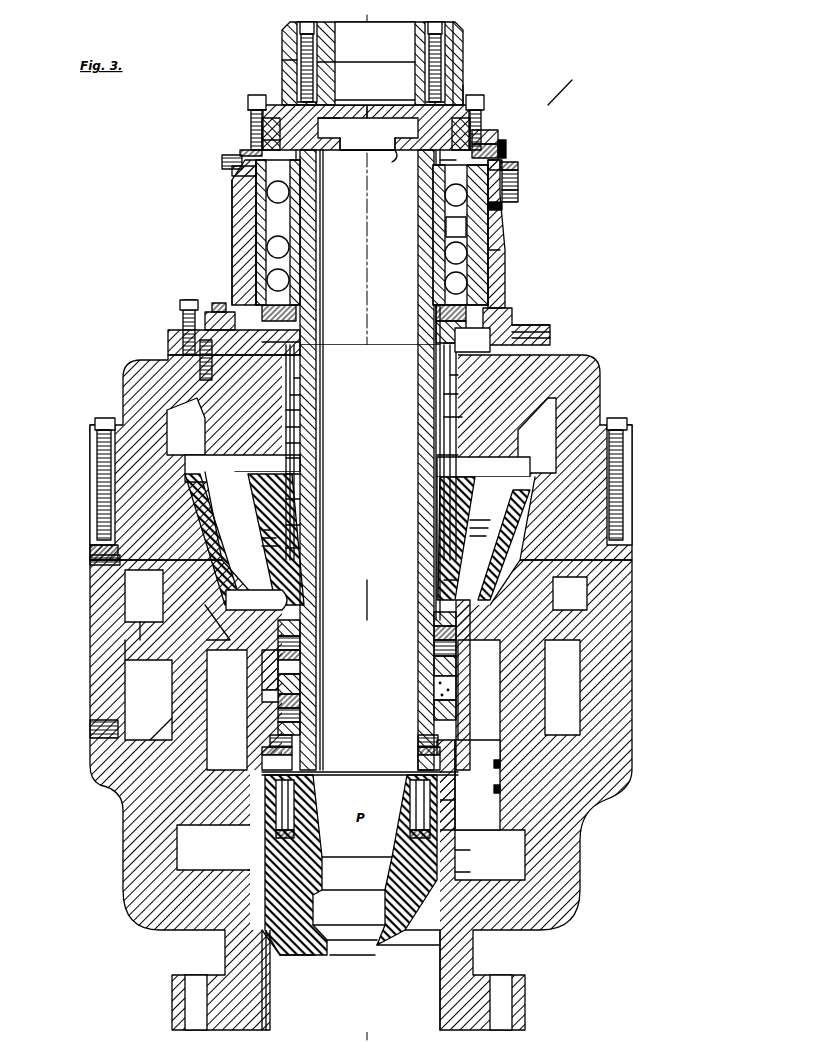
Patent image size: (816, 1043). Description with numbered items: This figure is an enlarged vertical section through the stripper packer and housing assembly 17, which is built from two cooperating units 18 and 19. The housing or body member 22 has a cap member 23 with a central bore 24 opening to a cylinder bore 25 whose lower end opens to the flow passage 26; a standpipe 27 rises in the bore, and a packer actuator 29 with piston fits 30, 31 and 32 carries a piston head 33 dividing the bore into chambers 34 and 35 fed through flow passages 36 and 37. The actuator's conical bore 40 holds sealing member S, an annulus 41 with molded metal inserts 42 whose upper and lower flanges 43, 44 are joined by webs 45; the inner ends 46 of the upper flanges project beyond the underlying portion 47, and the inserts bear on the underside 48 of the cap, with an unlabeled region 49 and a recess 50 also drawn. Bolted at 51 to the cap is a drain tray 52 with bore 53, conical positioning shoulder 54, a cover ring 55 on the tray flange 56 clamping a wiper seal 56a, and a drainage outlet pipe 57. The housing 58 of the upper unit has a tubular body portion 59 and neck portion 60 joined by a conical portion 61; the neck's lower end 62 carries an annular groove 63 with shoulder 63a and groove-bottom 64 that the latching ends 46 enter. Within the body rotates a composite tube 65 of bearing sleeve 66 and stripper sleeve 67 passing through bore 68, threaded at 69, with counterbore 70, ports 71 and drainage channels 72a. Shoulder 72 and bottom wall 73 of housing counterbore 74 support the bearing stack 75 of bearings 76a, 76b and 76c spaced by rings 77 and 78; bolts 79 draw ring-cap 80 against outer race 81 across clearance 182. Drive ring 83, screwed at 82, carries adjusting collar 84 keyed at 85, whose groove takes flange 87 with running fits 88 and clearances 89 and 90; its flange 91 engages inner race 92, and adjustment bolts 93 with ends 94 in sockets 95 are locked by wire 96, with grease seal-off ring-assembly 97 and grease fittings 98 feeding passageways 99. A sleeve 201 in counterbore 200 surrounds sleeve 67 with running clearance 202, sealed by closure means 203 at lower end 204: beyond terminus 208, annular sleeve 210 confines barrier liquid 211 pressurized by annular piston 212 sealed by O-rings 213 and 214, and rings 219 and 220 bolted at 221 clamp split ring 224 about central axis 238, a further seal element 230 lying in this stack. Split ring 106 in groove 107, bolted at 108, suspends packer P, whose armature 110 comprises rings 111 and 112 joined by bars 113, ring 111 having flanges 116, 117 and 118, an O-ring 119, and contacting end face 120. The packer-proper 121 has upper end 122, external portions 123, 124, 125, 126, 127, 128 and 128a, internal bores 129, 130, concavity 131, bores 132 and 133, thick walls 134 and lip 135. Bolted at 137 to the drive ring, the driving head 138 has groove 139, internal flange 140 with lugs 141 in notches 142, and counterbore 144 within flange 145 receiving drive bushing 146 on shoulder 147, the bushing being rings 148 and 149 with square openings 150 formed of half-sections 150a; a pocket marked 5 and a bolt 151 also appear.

The pocket 5 is at (535, 462).
The assembly 17 is at (530, 312).
The unit 18 is at (548, 105).
The unit 19 is at (72, 538).
The housing or body member 22 is at (606, 748).
The cap member 23 is at (130, 380).
The central bore 24 is at (444, 375).
The cylinder bore 25 is at (500, 768).
The flow passage 26 is at (438, 976).
The standpipe 27 is at (452, 713).
The packer actuator 29 is at (548, 603).
The piston fit 30 is at (170, 716).
The piston fit 31 is at (120, 653).
The piston fit 32 is at (120, 545).
The piston head 33 is at (139, 620).
The chamber 34 is at (148, 700).
The chamber 35 is at (144, 596).
The flow passage 36 is at (90, 732).
The flow passage 37 is at (90, 554).
The conical bore 40 is at (215, 614).
The annulus 41 is at (436, 530).
The metal inserts 42 is at (212, 578).
The upper plate or flange 43 is at (242, 468).
The lower plate or flange 44 is at (256, 600).
The vertical web 45 is at (238, 529).
The inner end 46 is at (436, 480).
The underlying portion 47 is at (440, 498).
The underside 48 is at (483, 467).
The valve member 49 is at (455, 565).
The recess 50 is at (214, 847).
The bolts 51 is at (190, 352).
The annular drain tray 52 is at (174, 333).
The bore 53 is at (296, 358).
The conical positioning shoulder 54 is at (296, 343).
The annular cover ring 55 is at (205, 307).
The tray flange 56 is at (190, 320).
The wiper seal 56a is at (220, 304).
The drainage outlet pipe 57 is at (528, 326).
The housing 58 is at (226, 247).
The tubular body portion 59 is at (500, 228).
The neck portion 60 is at (444, 394).
The conical portion 61 is at (472, 340).
The lower end 62 is at (296, 474).
The annular groove 63 is at (436, 455).
The shoulder 63a is at (296, 458).
The groove-bottom 64 is at (296, 443).
The composite tube 65 is at (318, 310).
The bearing sleeve 66 is at (436, 322).
The stripper sleeve 67 is at (434, 343).
The bore 68 is at (296, 427).
The threaded connection 69 is at (296, 378).
The counterbore 70 is at (296, 410).
The ports 71 is at (444, 417).
The annular shoulder 72 is at (436, 298).
The drainage channels 72a is at (296, 395).
The bottom wall 73 is at (252, 275).
The housing counterbore 74 is at (488, 252).
The stack of radio-thrust bearings 75 is at (248, 250).
The radio-thrust bearing 76a is at (446, 232).
The radio-thrust bearing 76b is at (445, 253).
The radio-thrust bearing 76c is at (445, 275).
The outer spacer ring 77 is at (250, 232).
The inner spacer ring 78 is at (290, 232).
The bolts 79 is at (518, 190).
The bearing ring-cap 80 is at (518, 166).
The outer race 81 is at (502, 207).
The screw connection 82 is at (367, 112).
The drive ring 83 is at (262, 143).
The bearing adjusting collar 84 is at (434, 174).
The key 85 is at (316, 174).
The upstanding flange 87 is at (232, 180).
The running fits 88 is at (506, 145).
The vertical clearance 89 is at (498, 143).
The annular clearance 90 is at (498, 127).
The depending annular flange 91 is at (434, 190).
The inner race 92 is at (438, 205).
The adjustment bolts 93 is at (262, 128).
The unthreaded ends 94 is at (420, 149).
The sockets 95 is at (434, 161).
The wire 96 is at (464, 90).
The grease seal-off ring-assembly 97 is at (316, 157).
The grease-gun fittings 98 is at (224, 161).
The passageways 99 is at (260, 150).
The split mounting ring 106 is at (300, 740).
The annular groove 107 is at (416, 734).
The bolts 108 is at (300, 752).
The armature 110 is at (295, 798).
The upper ring 111 is at (262, 774).
The lower ring 112 is at (302, 820).
The bars 113 is at (278, 800).
The internal horizontal flange portion 116 is at (360, 772).
The vertical flange portion 117 is at (416, 762).
The external horizontal flange 118 is at (268, 744).
The O-ring seal 119 is at (416, 748).
The lower end face 120 is at (410, 800).
The packer-proper 121 is at (455, 841).
The upper end 122 is at (262, 756).
The cylindrical portion 123 is at (440, 788).
The tapered portion 124 is at (452, 749).
The tapering portion 125 is at (456, 857).
The cylindrical portion 126 is at (456, 872).
The tapered portion 127 is at (400, 930).
The lower cylindrical portion 128 is at (318, 930).
The flared terminal portion 128a is at (312, 952).
The tapered bore 129 is at (392, 842).
The cylindrical bore 130 is at (353, 877).
The concavity 131 is at (349, 913).
The cylindrical bore 132 is at (352, 933).
The flaring bore 133 is at (352, 949).
The thick walls 134 is at (262, 857).
The tapered lip formation 135 is at (392, 948).
The bolts 137 is at (248, 95).
The driving head 138 is at (248, 112).
The annular groove 139 is at (300, 112).
The internal flange 140 is at (340, 120).
The lugs 141 is at (367, 147).
The notches 142 is at (365, 160).
The enlarged counterbore 144 is at (464, 73).
The vertical flange 145 is at (465, 40).
The drive bushing 146 is at (392, 34).
The shoulder 147 is at (290, 70).
The upper ring 148 is at (332, 42).
The lower ring 149 is at (332, 76).
The square openings 150 is at (375, 73).
The half-sections 150a is at (282, 28).
The bolt 151 is at (298, 50).
The vertical clearance 182 is at (520, 182).
The counterbore 200 is at (296, 499).
The sleeve 201 is at (296, 525).
The running clearance 202 is at (296, 548).
The closure means 203 is at (300, 626).
The lower end 204 is at (434, 616).
The terminus of restricted clearance 208 is at (434, 630).
The annular sleeve 210 is at (268, 680).
The barrier liquid 211 is at (434, 691).
The annular piston 212 is at (300, 703).
The O-ring 213 is at (266, 697).
The O-ring 214 is at (300, 716).
The upper ring 219 is at (300, 650).
The lower ring 220 is at (434, 677).
The bolts 221 is at (300, 680).
The split mounting ring 224 is at (300, 668).
The seal 230 is at (434, 645).
The central axis 238 is at (372, 600).